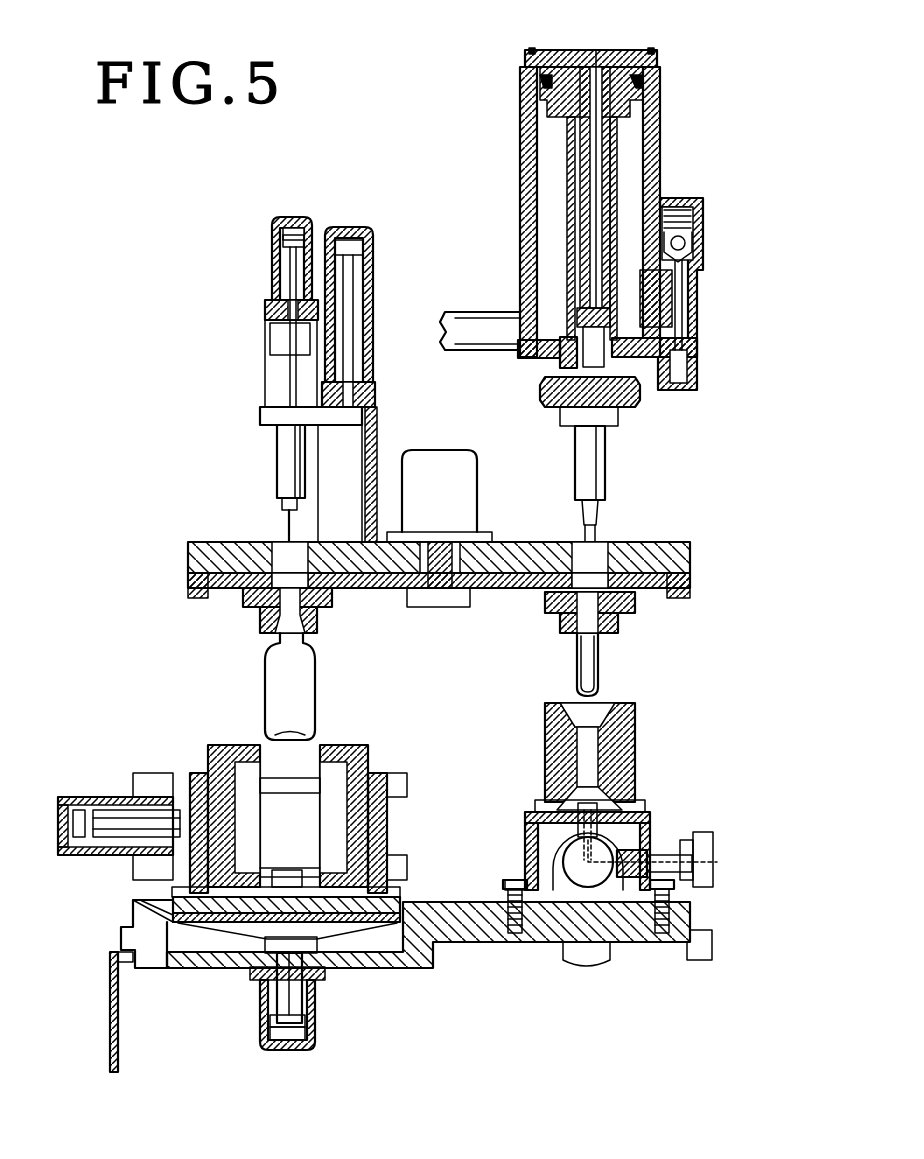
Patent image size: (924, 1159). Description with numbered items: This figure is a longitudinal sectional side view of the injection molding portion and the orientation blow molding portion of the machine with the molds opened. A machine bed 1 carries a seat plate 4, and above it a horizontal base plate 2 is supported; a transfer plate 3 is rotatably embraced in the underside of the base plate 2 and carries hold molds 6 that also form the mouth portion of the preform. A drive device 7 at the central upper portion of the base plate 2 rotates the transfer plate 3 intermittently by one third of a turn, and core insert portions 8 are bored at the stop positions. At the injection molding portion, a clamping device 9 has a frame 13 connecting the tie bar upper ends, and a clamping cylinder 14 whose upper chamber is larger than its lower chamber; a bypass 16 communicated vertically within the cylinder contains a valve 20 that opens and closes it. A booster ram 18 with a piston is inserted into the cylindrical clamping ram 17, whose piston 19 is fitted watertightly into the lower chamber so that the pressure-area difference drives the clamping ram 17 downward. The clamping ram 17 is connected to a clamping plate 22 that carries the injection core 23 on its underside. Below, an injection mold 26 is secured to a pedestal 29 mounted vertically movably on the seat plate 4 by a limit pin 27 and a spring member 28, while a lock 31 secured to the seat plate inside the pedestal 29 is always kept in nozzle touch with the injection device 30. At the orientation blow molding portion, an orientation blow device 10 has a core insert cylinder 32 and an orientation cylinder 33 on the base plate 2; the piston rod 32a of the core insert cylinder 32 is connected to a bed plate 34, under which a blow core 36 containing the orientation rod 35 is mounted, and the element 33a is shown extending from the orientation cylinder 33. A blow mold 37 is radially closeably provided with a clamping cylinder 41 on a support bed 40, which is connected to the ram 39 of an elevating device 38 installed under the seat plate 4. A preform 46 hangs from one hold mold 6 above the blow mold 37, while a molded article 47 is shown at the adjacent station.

The machine bed 1 is at (108, 1040).
The base plate 2 is at (690, 555).
The transfer plate 3 is at (372, 588).
The seat plate 4 is at (460, 930).
The hold mold 6 is at (250, 615).
The drive device 7 is at (440, 470).
The core insert portion 8 is at (578, 540).
The clamping device 9 is at (595, 310).
The orientation blow device 10 is at (299, 360).
The frame 13 is at (470, 310).
The clamping cylinder 14 is at (520, 90).
The bypass 16 is at (698, 318).
The clamping ram 17 is at (567, 185).
The booster ram 18 is at (585, 137).
The piston 19 is at (628, 100).
The valve 20 is at (690, 248).
The clamping plate 22 is at (630, 405).
The injection core 23 is at (598, 530).
The injection mold 26 is at (620, 740).
The limit pin 27 is at (512, 880).
The spring member 28 is at (672, 910).
The pedestal 29 is at (525, 820).
The injection device 30 is at (700, 838).
The lock 31 is at (605, 900).
The core insert cylinder 32 is at (352, 227).
The piston rod 32a is at (350, 358).
The orientation cylinder 33 is at (285, 217).
The piston rod 33a is at (292, 282).
The bed plate 34 is at (272, 410).
The orientation rod 35 is at (290, 525).
The blow core 36 is at (290, 455).
The blow mold 37 is at (208, 750).
The elevating device 38 is at (290, 1050).
The ram 39 is at (300, 1005).
The support bed 40 is at (210, 930).
The clamping cylinder 41 is at (95, 797).
The preform 46 is at (598, 665).
The molded article 47 is at (315, 700).